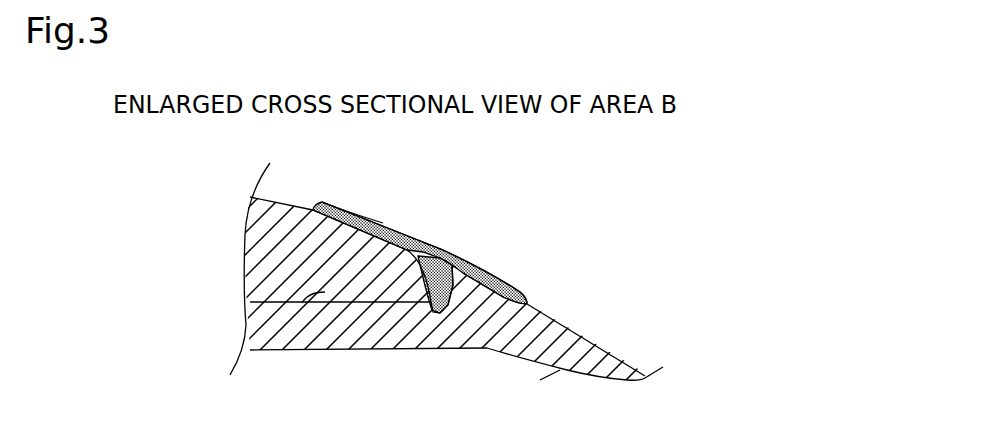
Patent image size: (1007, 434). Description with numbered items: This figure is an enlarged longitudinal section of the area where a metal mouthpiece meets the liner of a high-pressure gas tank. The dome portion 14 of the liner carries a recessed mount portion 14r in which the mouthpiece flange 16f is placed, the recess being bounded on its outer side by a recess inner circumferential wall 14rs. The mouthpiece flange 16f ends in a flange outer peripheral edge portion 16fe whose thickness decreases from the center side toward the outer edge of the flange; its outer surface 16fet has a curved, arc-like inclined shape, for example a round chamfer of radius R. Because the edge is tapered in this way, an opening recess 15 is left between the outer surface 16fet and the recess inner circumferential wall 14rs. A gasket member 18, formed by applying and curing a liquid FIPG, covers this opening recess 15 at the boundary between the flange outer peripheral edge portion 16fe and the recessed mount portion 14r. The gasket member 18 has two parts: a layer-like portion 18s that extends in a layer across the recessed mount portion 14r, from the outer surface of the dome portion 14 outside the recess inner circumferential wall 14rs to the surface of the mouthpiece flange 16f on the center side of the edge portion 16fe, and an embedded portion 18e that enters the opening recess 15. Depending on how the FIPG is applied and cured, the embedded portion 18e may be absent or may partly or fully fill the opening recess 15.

The dome portion 14 is at (587, 331).
The recessed mount portion 14r is at (302, 303).
The recess inner circumferential wall 14rs is at (437, 316).
The opening recess 15 is at (446, 256).
The mouthpiece flange 16f is at (246, 264).
The flange outer peripheral edge portion 16fe is at (383, 222).
The outer surface of the flange outer peripheral edge portion 16fet is at (430, 236).
The gasket member 18 is at (445, 221).
The embedded portion 18e is at (470, 258).
The layer-like portion 18s is at (498, 270).
The radius of round chamfering R is at (327, 283).